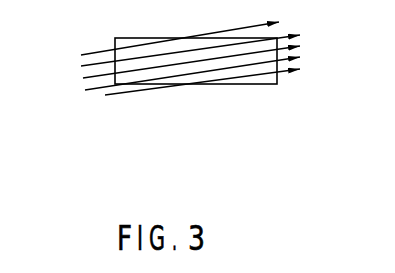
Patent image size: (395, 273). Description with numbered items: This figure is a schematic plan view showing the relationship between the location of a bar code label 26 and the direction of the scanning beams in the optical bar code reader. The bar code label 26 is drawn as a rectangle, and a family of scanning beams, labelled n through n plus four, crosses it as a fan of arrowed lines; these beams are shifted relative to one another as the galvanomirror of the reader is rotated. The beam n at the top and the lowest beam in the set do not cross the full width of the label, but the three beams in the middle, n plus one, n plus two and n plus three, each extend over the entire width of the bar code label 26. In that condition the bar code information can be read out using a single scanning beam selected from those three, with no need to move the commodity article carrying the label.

The bar code label 26 is at (264, 84).
The scanning beam n is at (169, 43).